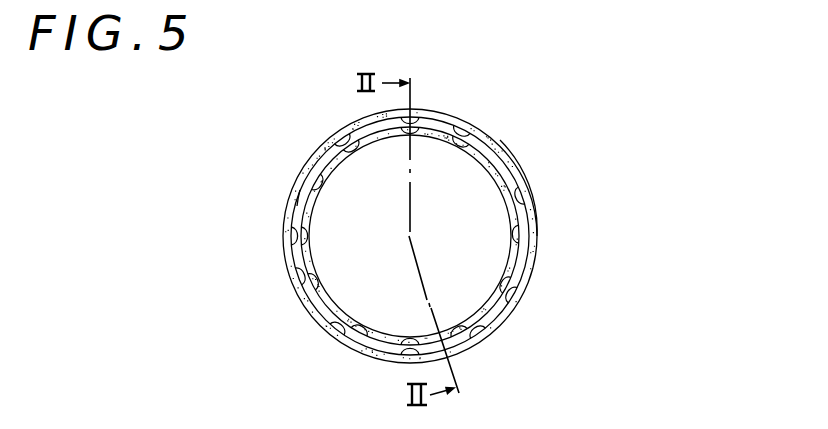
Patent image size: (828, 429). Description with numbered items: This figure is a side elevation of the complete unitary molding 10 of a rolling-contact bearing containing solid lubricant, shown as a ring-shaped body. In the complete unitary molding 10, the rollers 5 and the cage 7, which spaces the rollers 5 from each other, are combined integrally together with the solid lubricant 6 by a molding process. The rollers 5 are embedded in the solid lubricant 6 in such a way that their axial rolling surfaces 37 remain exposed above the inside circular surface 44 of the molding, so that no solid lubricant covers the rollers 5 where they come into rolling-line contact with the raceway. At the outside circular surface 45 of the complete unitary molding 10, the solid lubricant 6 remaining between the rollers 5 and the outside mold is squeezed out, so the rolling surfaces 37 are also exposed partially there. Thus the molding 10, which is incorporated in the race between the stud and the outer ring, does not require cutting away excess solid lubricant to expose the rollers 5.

The complete unitary molding 10 is at (503, 140).
The rollers 5 is at (535, 237).
The solid lubricant 6 is at (328, 163).
The cage 7 is at (298, 203).
The rolling surfaces 37 is at (308, 233).
The inside circular surface 44 is at (340, 330).
The outside circular surface 45 is at (513, 160).